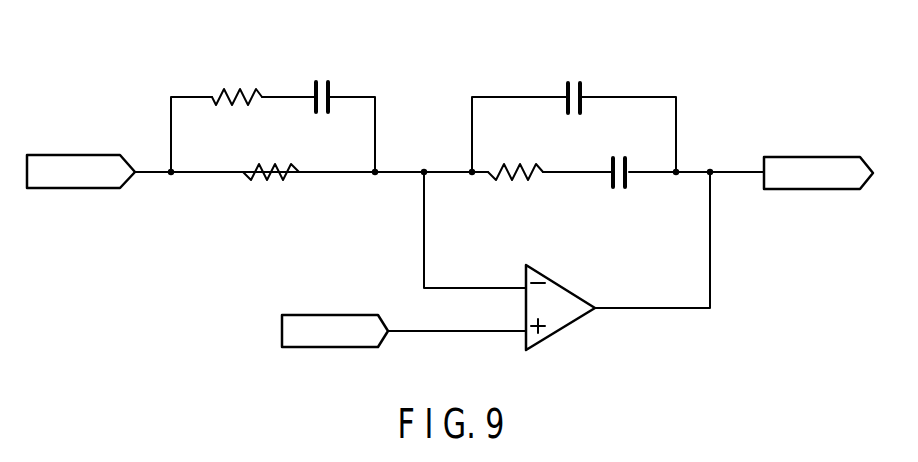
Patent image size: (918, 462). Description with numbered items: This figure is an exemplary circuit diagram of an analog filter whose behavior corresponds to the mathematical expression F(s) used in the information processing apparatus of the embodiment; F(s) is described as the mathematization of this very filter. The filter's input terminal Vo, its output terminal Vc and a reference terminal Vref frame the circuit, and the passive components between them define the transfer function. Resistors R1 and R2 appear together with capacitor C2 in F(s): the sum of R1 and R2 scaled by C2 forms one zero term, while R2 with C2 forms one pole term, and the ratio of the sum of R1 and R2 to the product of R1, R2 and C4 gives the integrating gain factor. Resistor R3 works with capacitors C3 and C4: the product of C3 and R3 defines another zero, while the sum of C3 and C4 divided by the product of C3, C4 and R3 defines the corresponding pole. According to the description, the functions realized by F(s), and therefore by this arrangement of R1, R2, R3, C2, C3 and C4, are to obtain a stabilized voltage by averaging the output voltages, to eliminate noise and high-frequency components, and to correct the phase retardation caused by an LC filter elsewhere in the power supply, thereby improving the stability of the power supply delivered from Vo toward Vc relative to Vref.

The resistor R1 is at (280, 178).
The resistor R2 is at (231, 91).
The resistor R3 is at (525, 178).
The capacitor C2 is at (325, 78).
The capacitor C3 is at (619, 190).
The capacitor C4 is at (578, 79).
The output voltage input port Vo is at (81, 171).
The control voltage output port Vc is at (818, 173).
The reference voltage port Vref is at (335, 331).